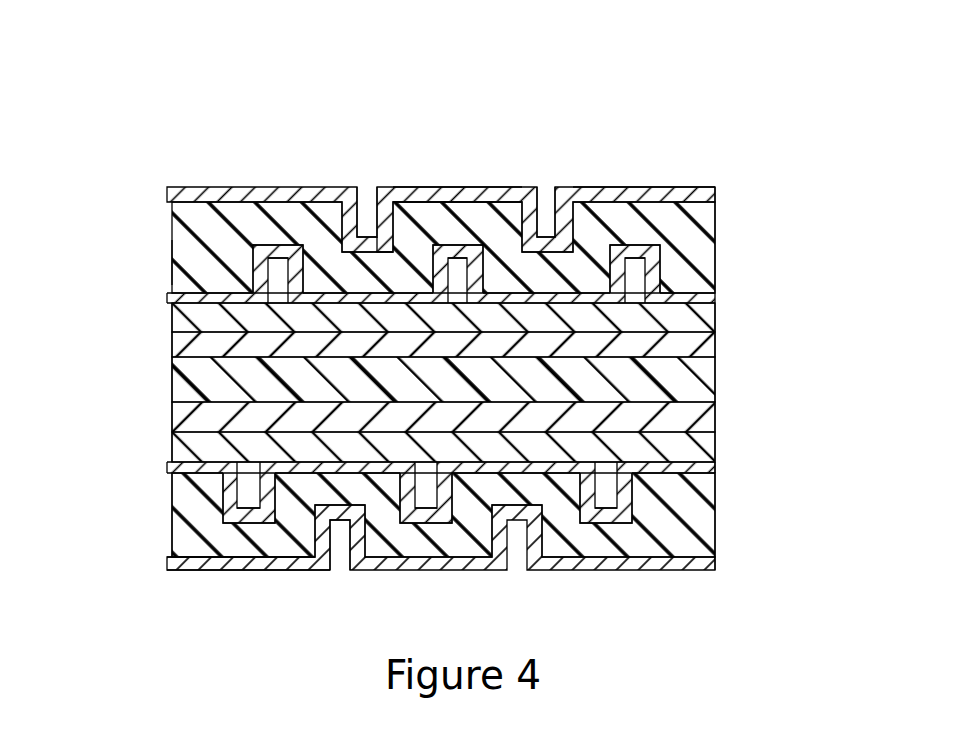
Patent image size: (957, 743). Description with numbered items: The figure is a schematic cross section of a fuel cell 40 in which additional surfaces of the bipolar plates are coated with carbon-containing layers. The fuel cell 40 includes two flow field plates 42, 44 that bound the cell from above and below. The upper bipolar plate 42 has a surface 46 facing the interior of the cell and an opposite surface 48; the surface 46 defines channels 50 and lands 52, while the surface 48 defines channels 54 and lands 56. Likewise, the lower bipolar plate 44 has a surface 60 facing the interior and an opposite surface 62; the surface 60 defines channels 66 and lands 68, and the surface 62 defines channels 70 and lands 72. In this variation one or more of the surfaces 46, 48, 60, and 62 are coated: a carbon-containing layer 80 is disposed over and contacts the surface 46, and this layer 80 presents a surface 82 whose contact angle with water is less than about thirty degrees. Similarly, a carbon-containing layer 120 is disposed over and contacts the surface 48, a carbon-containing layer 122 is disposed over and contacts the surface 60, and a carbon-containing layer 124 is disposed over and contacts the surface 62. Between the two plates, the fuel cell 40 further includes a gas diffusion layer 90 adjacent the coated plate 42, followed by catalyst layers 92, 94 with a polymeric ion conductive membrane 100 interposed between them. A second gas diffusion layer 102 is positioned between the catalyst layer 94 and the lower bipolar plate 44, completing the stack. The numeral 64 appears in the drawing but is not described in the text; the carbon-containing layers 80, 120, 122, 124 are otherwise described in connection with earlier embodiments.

The fuel cell 40 is at (657, 146).
The flow field plate 42 is at (152, 204).
The flow field plate 44 is at (178, 580).
The surface 46 is at (288, 245).
The surface 48 is at (480, 198).
The channels 50 is at (278, 277).
The lands 52 is at (372, 290).
The channels 54 is at (364, 232).
The lands 56 is at (423, 192).
The surface 60 is at (172, 470).
The surface 62 is at (196, 557).
The conductive via 64 is at (607, 490).
The channels 66 is at (227, 488).
The lands 68 is at (372, 474).
The channels 70 is at (338, 538).
The lands 72 is at (256, 562).
The carbon-containing layer 80 is at (172, 295).
The surface 82 is at (645, 284).
The gas diffusion layer 90 is at (172, 320).
The catalyst layer 92 is at (715, 345).
The catalyst layer 94 is at (172, 413).
The polymeric ion conductive membrane 100 is at (715, 374).
The gas diffusion layer 102 is at (715, 445).
The carbon-containing layer 120 is at (208, 188).
The carbon-containing layer 122 is at (715, 467).
The carbon-containing layer 124 is at (568, 572).